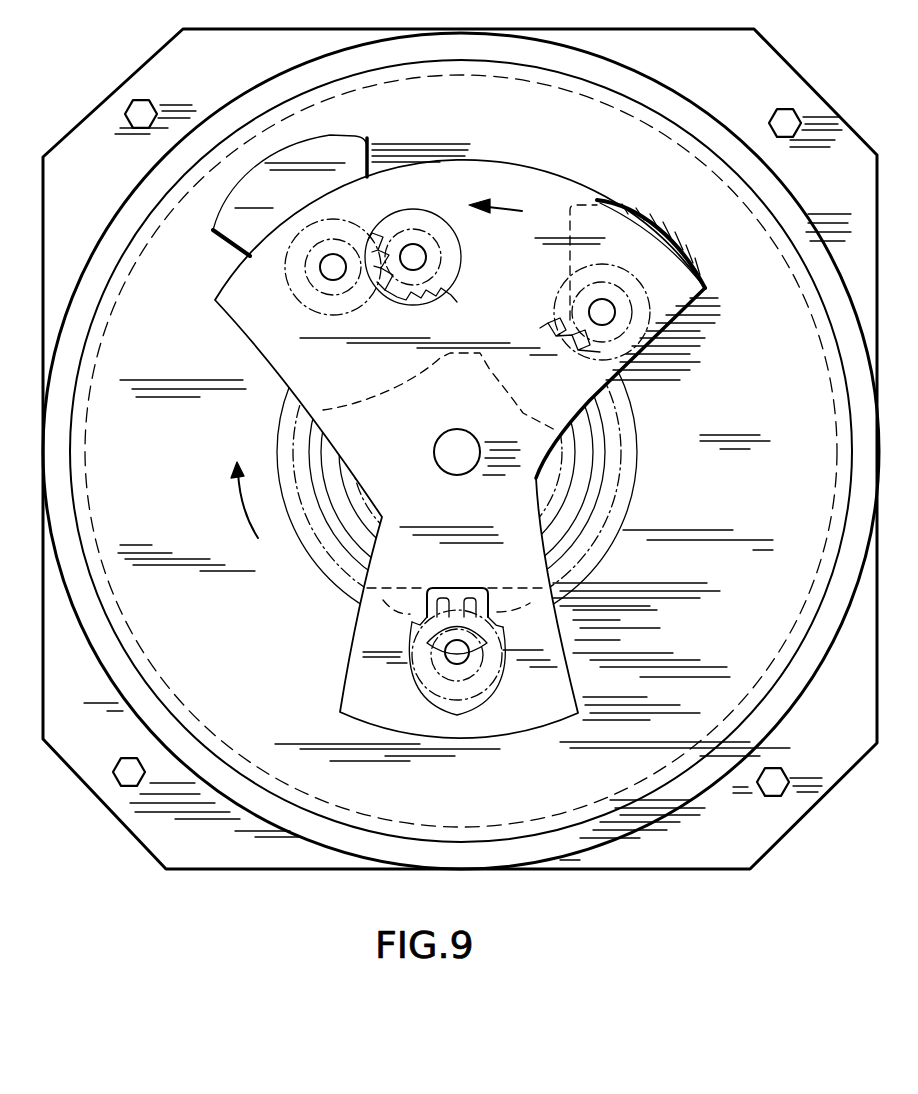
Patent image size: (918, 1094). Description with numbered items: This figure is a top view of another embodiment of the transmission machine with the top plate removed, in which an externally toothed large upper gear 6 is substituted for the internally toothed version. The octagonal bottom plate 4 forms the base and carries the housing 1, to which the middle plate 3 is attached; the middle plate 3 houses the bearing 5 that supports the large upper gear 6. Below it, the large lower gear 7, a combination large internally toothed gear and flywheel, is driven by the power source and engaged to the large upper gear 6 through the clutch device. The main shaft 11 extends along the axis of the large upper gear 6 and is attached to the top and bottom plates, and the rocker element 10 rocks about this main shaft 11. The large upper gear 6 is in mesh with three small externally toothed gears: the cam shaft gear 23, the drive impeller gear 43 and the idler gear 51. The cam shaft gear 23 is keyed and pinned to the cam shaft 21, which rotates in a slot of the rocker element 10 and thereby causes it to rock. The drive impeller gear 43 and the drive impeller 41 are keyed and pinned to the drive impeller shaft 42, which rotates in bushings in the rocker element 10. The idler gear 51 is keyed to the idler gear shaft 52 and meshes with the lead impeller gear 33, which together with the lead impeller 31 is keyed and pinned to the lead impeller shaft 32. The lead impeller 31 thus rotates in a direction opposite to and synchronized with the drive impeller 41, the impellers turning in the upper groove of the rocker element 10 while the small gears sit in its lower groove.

The housing 1 is at (704, 109).
The middle plate 3 is at (562, 795).
The bottom plate 4 is at (742, 30).
The bearing 5 is at (608, 553).
The large upper gear 6 is at (340, 567).
The large lower gear 7 is at (668, 757).
The rocker element 10 is at (229, 316).
The main shaft 11 is at (437, 470).
The cam shaft 21 is at (467, 693).
The cam shaft gear 23 is at (441, 696).
The lead impeller 31 is at (683, 234).
The lead impeller shaft 32 is at (608, 303).
The lead impeller gear 33 is at (595, 262).
The drive impeller 41 is at (343, 136).
The drive impeller shaft 42 is at (323, 265).
The drive impeller gear 43 is at (300, 232).
The idler gear 51 is at (412, 208).
The idler gear shaft 52 is at (427, 262).